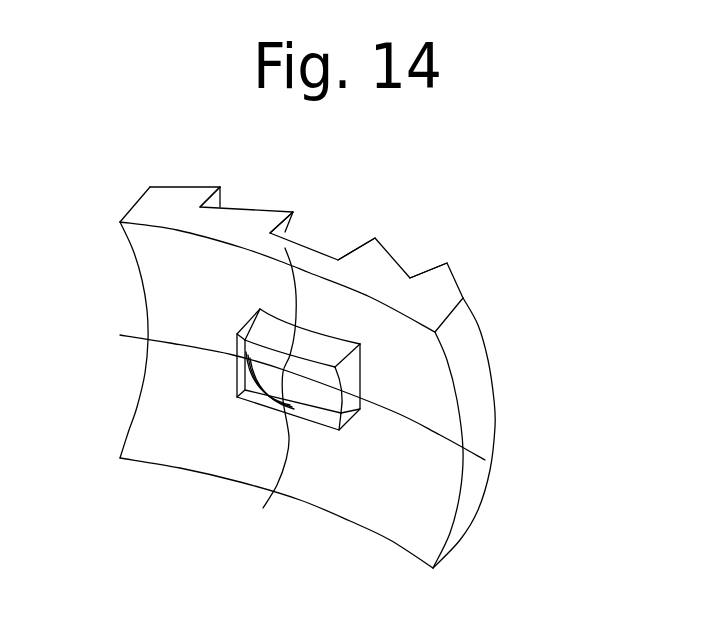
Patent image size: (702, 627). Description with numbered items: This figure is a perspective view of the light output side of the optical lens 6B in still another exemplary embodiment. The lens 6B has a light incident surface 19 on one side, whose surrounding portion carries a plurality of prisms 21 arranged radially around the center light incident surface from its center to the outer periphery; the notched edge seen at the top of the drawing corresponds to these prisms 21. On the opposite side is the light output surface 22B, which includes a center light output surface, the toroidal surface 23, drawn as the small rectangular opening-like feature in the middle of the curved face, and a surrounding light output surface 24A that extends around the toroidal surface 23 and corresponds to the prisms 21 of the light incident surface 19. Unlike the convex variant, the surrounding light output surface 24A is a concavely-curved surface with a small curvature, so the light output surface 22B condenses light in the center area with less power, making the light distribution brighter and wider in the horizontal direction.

The light incident surface 19 is at (205, 167).
The lens 6B is at (410, 153).
The prisms 21 is at (273, 222).
The light output surface 22B is at (177, 492).
The toroidal surface 23 is at (308, 393).
The surrounding light output surface 24A is at (407, 527).